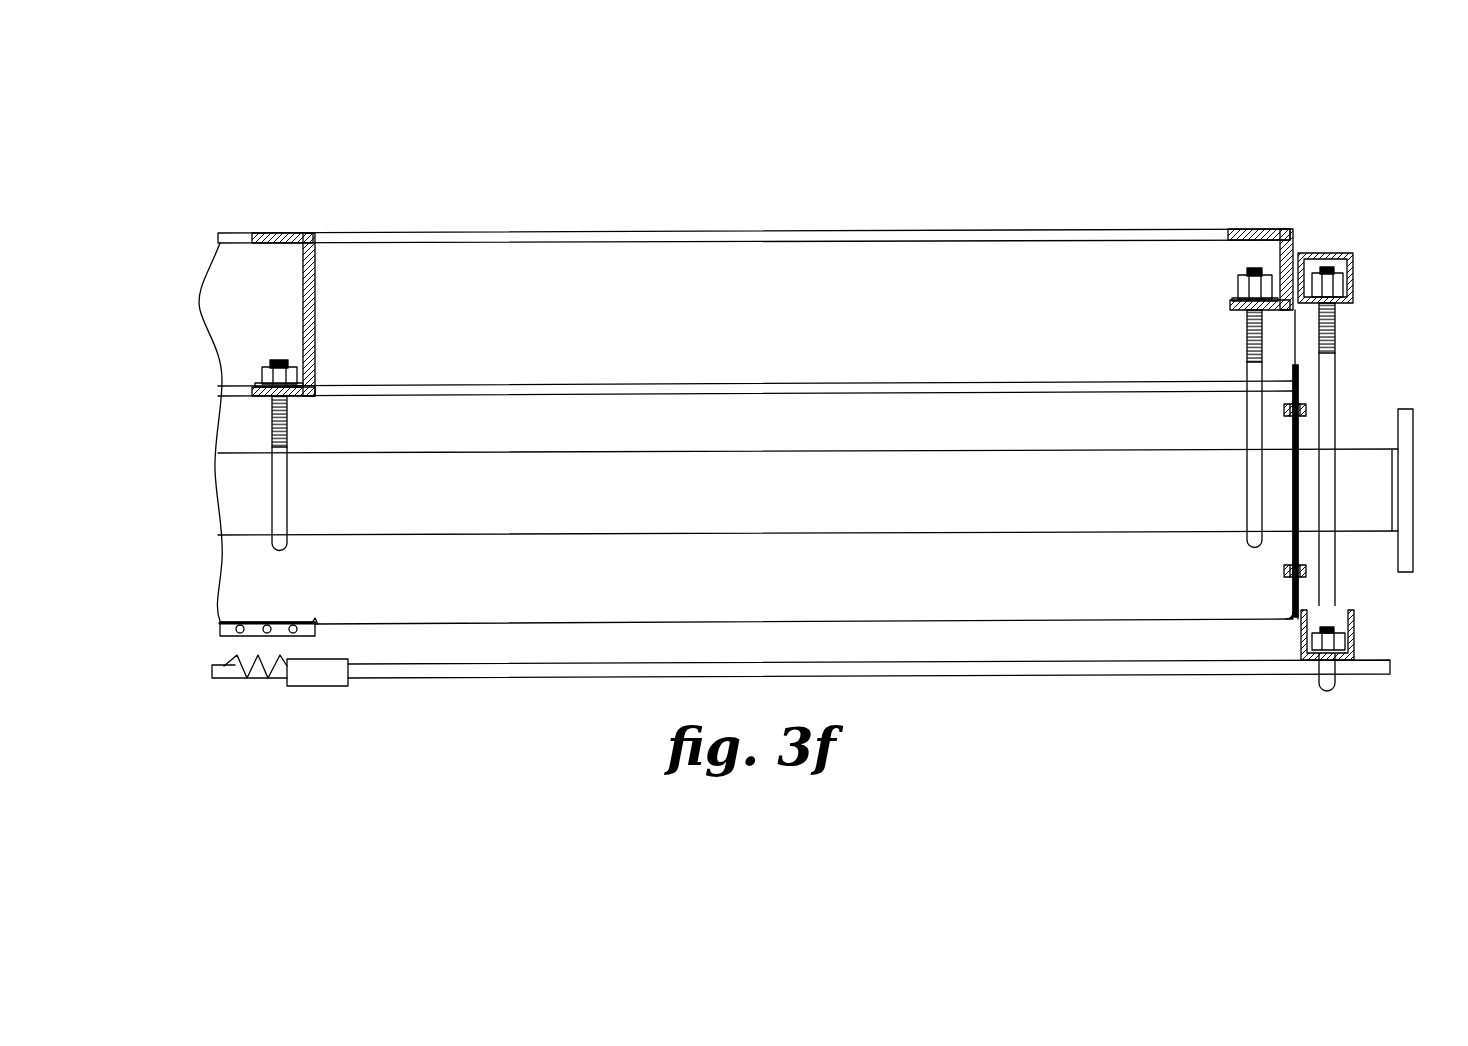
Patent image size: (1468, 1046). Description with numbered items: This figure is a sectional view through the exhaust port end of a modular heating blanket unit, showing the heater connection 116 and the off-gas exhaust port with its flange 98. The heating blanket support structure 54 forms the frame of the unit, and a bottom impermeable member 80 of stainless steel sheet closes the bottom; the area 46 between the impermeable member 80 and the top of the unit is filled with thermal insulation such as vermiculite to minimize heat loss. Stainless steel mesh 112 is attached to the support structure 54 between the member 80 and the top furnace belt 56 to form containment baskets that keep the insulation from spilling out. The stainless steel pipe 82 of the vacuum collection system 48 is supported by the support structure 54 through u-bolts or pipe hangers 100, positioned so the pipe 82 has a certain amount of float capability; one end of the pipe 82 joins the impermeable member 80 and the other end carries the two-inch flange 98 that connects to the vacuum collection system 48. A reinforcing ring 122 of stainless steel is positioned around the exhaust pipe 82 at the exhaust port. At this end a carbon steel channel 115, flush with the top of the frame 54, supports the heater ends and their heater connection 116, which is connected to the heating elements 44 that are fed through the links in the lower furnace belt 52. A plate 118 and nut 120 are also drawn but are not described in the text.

The heating elements 44 is at (258, 675).
The area 46 is at (463, 423).
The vacuum collection system 48 is at (1365, 363).
The lower furnace belt 52 is at (237, 658).
The heating blanket support structure 54 is at (1017, 203).
The top furnace belt 56 is at (282, 628).
The bottom impermeable member 80 is at (257, 620).
The pipe 82 is at (893, 470).
The flange 98 is at (1408, 432).
The pipe hangers 100 is at (222, 421).
The stainless steel mesh 112 is at (585, 625).
The carbon steel channel 115 is at (1350, 257).
The heater connection 116 is at (1070, 670).
The plate 118 is at (1293, 470).
The nut 120 is at (1293, 592).
The reinforcing ring 122 is at (1306, 410).